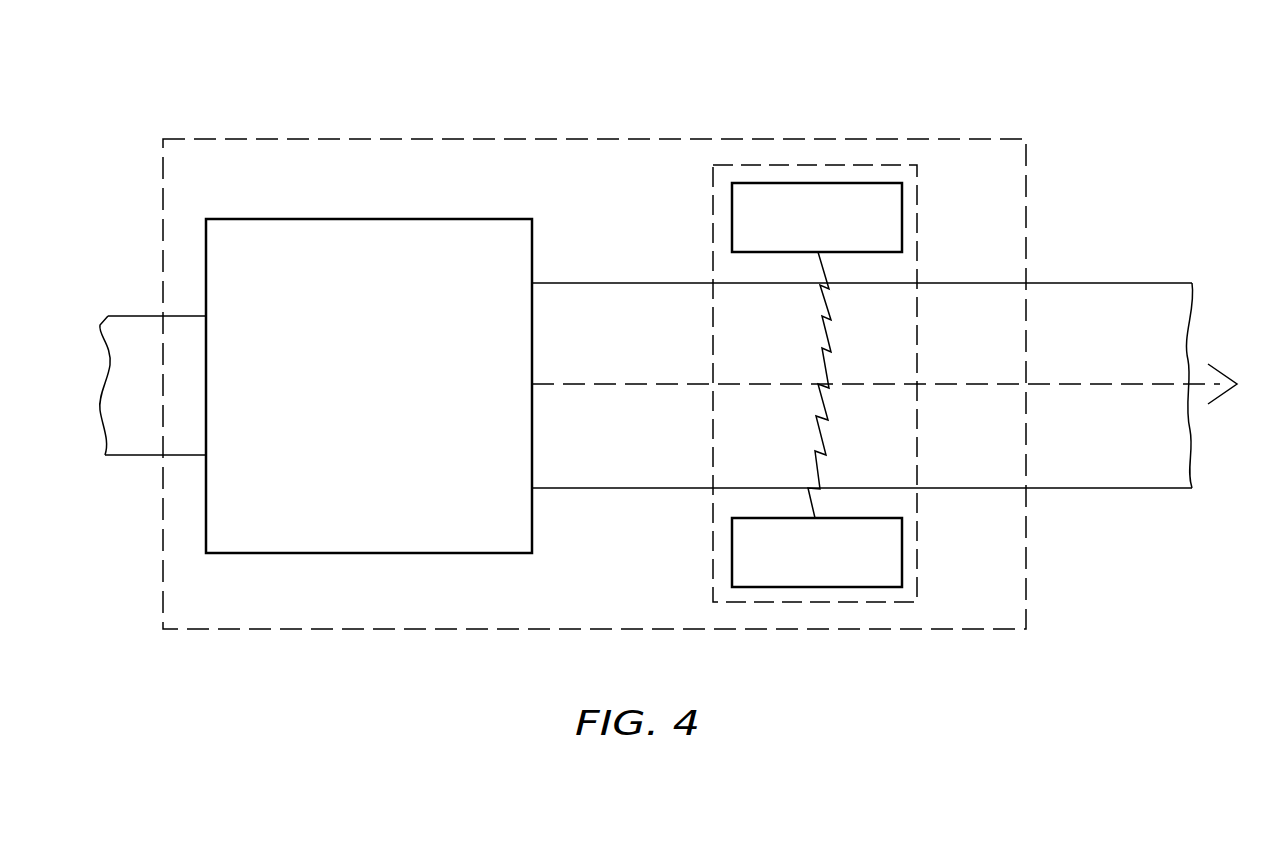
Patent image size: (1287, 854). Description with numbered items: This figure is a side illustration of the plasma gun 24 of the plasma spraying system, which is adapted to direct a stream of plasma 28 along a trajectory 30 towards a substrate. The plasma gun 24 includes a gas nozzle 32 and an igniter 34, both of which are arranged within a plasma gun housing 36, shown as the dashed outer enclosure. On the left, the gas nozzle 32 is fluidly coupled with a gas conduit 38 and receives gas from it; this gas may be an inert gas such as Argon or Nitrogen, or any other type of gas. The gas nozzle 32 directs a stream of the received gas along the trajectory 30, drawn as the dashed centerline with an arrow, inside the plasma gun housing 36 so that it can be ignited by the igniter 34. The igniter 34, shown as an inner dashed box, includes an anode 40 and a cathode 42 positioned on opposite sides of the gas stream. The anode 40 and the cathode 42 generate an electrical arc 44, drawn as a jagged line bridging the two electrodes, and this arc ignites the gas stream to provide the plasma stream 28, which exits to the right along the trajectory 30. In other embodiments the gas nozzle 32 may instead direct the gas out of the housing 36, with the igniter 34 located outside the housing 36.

The plasma gun 24 is at (397, 124).
The plasma stream 28 is at (1100, 488).
The trajectory 30 is at (1097, 383).
The gas nozzle 32 is at (400, 217).
The igniter 34 is at (832, 165).
The plasma gun housing 36 is at (528, 139).
The gas conduit 38 is at (143, 455).
The anode 40 is at (902, 215).
The cathode 42 is at (902, 552).
The electrical arc 44 is at (823, 440).